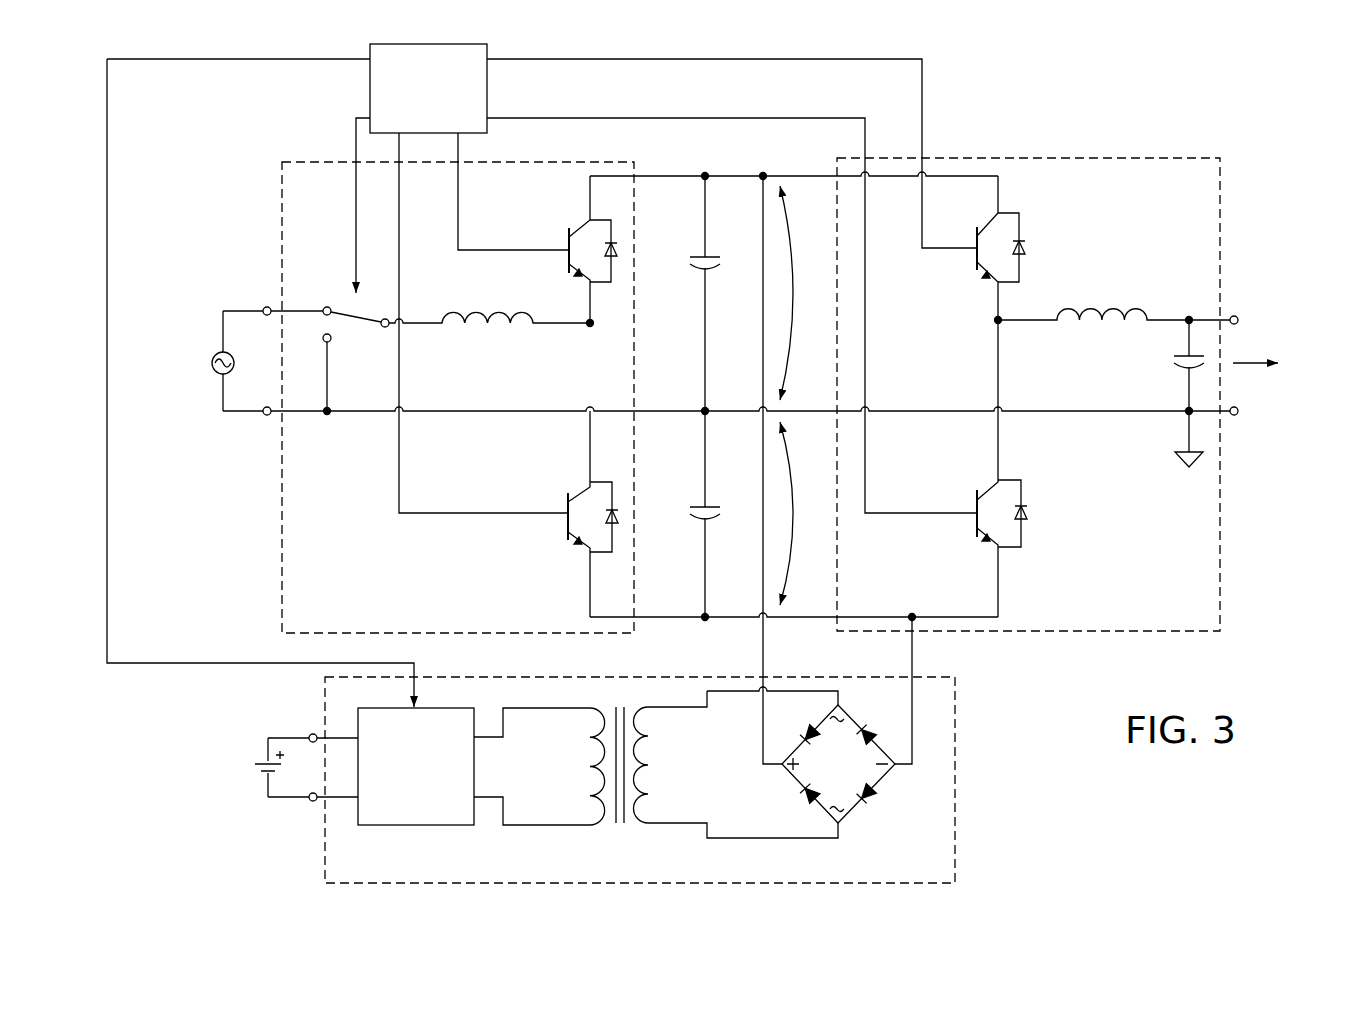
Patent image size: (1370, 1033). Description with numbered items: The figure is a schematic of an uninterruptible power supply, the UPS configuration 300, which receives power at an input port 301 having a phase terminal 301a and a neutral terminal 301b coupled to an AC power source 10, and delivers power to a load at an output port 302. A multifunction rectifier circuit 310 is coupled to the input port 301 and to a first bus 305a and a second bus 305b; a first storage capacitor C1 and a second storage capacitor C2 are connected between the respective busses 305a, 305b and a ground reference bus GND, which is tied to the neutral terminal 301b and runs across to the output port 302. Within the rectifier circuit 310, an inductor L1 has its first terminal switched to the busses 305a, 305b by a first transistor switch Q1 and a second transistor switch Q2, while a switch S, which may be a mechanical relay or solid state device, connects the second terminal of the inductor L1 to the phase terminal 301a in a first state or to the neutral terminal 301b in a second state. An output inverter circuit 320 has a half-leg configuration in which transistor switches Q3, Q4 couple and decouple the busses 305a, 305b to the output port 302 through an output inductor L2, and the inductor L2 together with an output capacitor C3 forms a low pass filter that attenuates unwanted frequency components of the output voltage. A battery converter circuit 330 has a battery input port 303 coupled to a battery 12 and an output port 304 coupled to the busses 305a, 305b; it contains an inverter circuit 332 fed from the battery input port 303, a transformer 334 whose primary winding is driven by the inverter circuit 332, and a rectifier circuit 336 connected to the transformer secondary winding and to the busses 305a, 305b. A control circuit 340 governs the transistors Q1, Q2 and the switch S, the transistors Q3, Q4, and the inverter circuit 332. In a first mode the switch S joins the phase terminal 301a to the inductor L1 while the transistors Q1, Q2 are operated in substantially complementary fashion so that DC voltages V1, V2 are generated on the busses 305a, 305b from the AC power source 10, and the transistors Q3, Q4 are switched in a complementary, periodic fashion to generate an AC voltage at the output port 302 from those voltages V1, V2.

The UPS configuration 300 is at (1252, 112).
The control circuit 340 is at (427, 44).
The input port 301 is at (194, 339).
The phase terminal 301a is at (264, 307).
The neutral terminal 301b is at (266, 416).
The AC power source 10 is at (213, 373).
The multifunction rectifier circuit 310 is at (575, 162).
The output inverter circuit 320 is at (1030, 159).
The first bus 305a is at (727, 175).
The second bus 305b is at (727, 617).
The output port 302 is at (1288, 326).
The battery input port 303 is at (297, 723).
The battery 12 is at (222, 800).
The battery converter circuit 330 is at (955, 778).
The inverter circuit 332 is at (415, 826).
The transformer 334 is at (650, 840).
The rectifier circuit 336 is at (883, 810).
The output port 304 is at (837, 673).
The switch S is at (343, 300).
The inductor L1 is at (502, 305).
The output inductor L2 is at (1110, 302).
The first transistor switch Q1 is at (549, 226).
The second transistor switch Q2 is at (555, 488).
The transistor switch Q3 is at (1050, 223).
The transistor switch Q4 is at (1045, 495).
The first storage capacitor C1 is at (690, 250).
The second storage capacitor C2 is at (692, 500).
The output capacitor C3 is at (1173, 364).
The DC voltage V1 is at (796, 293).
The DC voltage V2 is at (792, 513).
The ground reference bus GND is at (913, 411).